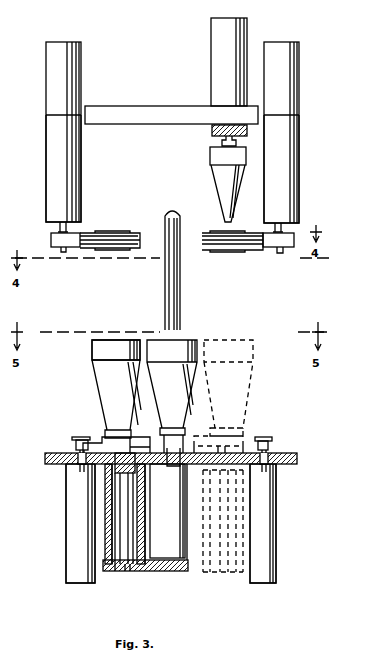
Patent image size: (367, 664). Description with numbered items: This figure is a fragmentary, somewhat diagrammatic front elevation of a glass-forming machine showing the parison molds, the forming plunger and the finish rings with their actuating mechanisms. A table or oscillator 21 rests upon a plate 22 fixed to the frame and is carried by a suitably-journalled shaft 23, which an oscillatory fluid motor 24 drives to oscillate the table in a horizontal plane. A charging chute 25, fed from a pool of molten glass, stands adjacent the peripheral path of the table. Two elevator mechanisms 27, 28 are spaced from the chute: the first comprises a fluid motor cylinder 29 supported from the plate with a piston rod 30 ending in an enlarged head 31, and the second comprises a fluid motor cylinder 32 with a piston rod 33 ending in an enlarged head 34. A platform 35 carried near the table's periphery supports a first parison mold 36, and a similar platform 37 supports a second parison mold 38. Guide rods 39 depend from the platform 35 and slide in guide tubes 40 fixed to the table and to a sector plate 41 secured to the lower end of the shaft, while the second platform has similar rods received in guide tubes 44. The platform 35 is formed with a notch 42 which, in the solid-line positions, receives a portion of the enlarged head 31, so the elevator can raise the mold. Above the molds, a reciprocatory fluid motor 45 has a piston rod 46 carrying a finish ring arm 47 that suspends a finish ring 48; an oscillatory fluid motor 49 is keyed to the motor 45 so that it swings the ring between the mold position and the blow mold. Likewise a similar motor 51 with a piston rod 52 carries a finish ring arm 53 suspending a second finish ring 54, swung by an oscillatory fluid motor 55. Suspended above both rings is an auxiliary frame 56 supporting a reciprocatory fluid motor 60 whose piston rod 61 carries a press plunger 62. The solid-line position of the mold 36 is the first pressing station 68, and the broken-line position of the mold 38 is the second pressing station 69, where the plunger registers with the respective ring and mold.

The table or oscillator 21 is at (220, 452).
The plate 22 is at (292, 460).
The shaft 23 is at (172, 436).
The oscillatory fluid motor 24 is at (193, 562).
The charging chute 25 is at (165, 292).
The elevator mechanism 27 is at (58, 496).
The elevator mechanism 28 is at (288, 492).
The fluid motor cylinder 29 is at (72, 535).
The piston rod 30 is at (78, 452).
The enlarged head 31 is at (76, 440).
The fluid motor cylinder 32 is at (270, 542).
The piston rod 33 is at (270, 452).
The enlarged head 34 is at (272, 440).
The platform 35 is at (138, 440).
The first parison mold 36 is at (96, 373).
The platform 37 is at (240, 440).
The second parison mold 38 is at (183, 342).
The guide rods 39 is at (137, 572).
The guide tubes 40 is at (131, 522).
The sector plate 41 is at (153, 572).
The notch 42 is at (81, 436).
The guide tubes 44 is at (222, 574).
The reciprocatory fluid motor 45 is at (52, 168).
The piston rod 46 is at (58, 230).
The finish ring arm 47 is at (80, 240).
The finish ring 48 is at (127, 224).
The oscillatory fluid motor 49 is at (50, 69).
The motor 51 is at (275, 176).
The piston rod 52 is at (280, 252).
The finish ring arm 53 is at (266, 250).
The second finish ring 54 is at (227, 260).
The oscillatory fluid motor 55 is at (276, 50).
The auxiliary frame 56 is at (135, 111).
The reciprocatory fluid motor 60 is at (218, 32).
The piston rod 61 is at (222, 142).
The press plunger 62 is at (221, 185).
The first pressing station 68 is at (99, 328).
The second pressing station 69 is at (263, 341).